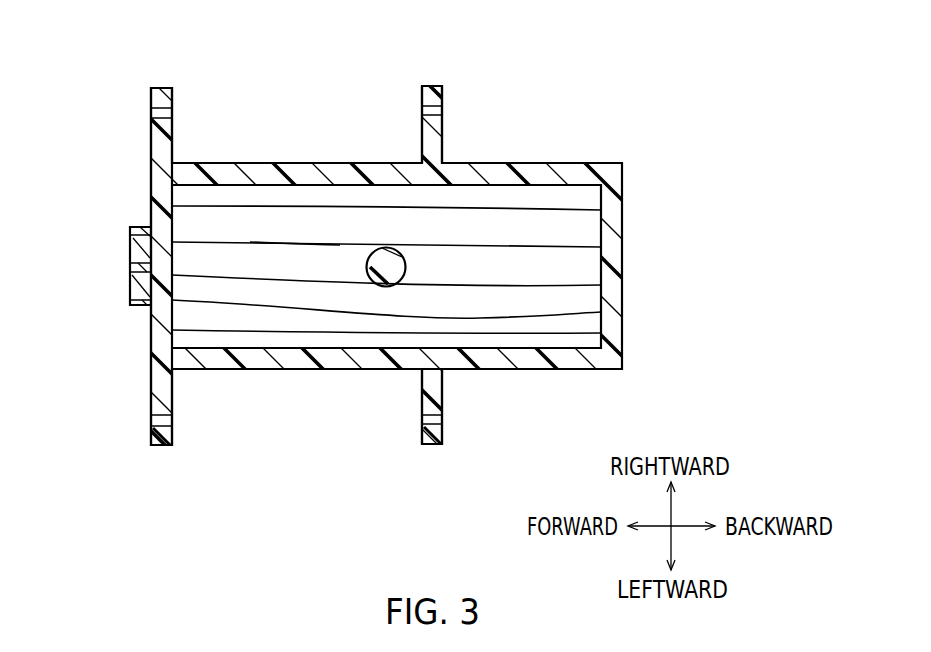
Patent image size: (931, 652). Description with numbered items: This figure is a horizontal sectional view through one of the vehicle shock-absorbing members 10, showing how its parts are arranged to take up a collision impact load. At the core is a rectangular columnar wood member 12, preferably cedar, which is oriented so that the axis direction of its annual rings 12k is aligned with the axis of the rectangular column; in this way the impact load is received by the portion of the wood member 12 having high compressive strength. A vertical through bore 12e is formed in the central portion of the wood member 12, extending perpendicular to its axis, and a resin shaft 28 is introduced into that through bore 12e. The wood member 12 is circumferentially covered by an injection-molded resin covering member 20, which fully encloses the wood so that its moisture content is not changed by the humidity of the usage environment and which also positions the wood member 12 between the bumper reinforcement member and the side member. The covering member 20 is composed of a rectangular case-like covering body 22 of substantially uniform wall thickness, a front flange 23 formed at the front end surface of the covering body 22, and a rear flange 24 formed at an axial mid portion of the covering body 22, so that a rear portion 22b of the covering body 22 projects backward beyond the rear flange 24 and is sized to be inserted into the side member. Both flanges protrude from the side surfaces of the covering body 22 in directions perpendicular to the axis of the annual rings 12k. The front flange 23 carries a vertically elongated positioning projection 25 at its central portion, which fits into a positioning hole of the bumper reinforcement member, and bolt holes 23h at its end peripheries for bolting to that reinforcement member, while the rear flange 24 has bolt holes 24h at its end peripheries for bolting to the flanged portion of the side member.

The shock-absorbing member 10 is at (367, 109).
The wood member 12 is at (505, 229).
The through bore 12e is at (395, 250).
The annual rings 12k is at (308, 243).
The covering member 20 is at (485, 163).
The covering body 22 is at (333, 357).
The rear portion of covering body 22b is at (563, 357).
The front flange 23 is at (160, 145).
The bolt hole 23h is at (152, 439).
The rear flange 24 is at (432, 384).
The bolt hole 24h is at (440, 432).
The positioning projection 25 is at (137, 227).
The resin shaft 28 is at (383, 286).